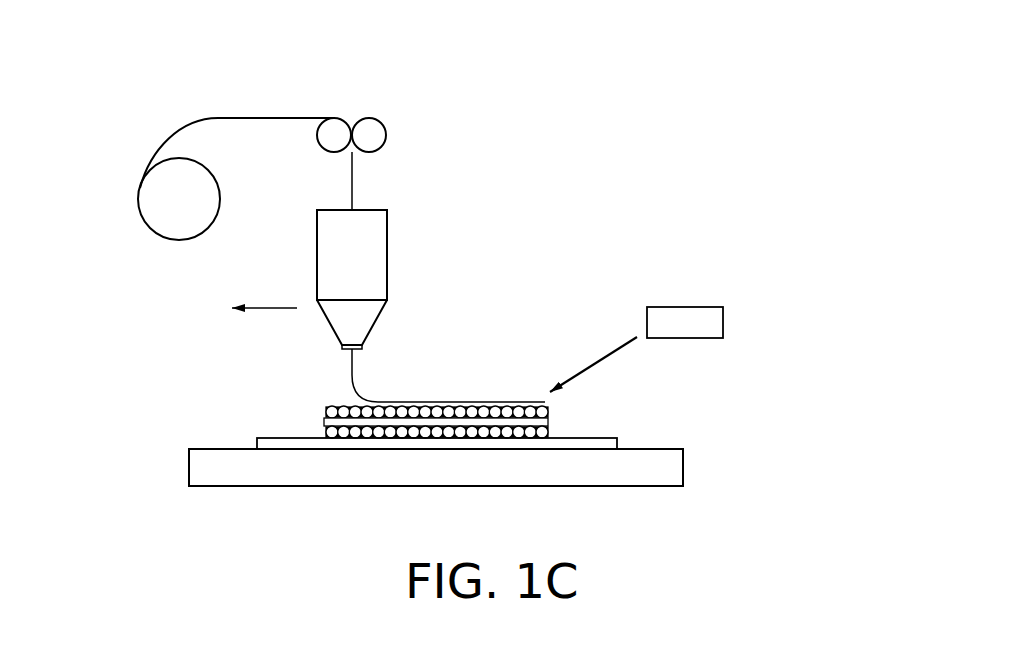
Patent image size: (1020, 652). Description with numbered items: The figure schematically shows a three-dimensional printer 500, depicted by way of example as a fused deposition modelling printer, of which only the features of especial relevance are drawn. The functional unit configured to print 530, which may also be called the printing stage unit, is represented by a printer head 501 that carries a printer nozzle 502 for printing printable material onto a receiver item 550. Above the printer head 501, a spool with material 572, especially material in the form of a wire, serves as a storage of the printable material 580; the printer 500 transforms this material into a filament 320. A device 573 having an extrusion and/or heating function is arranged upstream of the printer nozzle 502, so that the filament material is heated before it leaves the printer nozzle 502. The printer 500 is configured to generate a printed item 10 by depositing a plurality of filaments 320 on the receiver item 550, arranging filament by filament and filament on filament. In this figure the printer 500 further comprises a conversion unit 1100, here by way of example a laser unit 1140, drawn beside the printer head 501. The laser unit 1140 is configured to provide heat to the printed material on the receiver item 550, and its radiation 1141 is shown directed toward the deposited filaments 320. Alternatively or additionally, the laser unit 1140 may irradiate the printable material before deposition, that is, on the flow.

The 3D item 10 is at (665, 430).
The filament 320 is at (355, 373).
The 3D printer 500 is at (700, 165).
The printer head 501 is at (407, 285).
The printer nozzle 502 is at (335, 357).
The functional unit configured to 3D print 530 is at (125, 287).
The receiver item 550 is at (236, 441).
The spool with material 572 is at (138, 141).
The device comprising an extrusion and/or heating function 573 is at (400, 147).
The storage of the printable material 580 is at (286, 120).
The conversion unit 1100 is at (790, 292).
The laser unit 1140 is at (740, 306).
The radiation of the laser unit 1141 is at (612, 355).